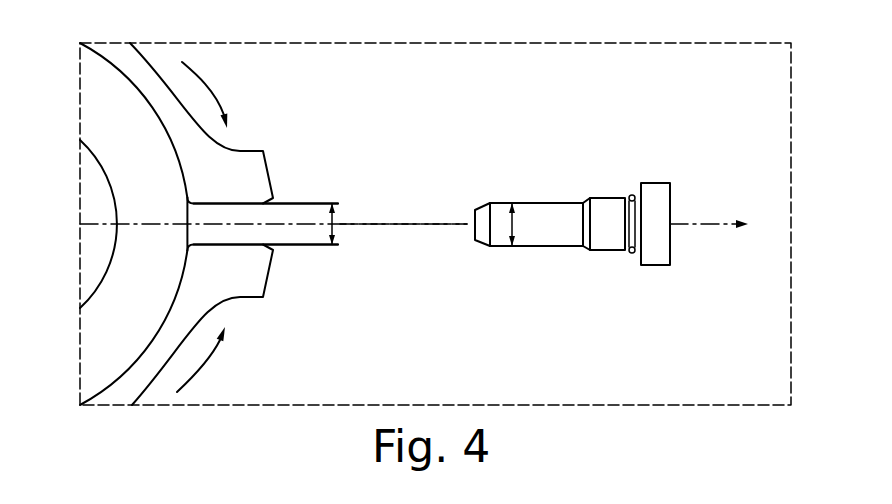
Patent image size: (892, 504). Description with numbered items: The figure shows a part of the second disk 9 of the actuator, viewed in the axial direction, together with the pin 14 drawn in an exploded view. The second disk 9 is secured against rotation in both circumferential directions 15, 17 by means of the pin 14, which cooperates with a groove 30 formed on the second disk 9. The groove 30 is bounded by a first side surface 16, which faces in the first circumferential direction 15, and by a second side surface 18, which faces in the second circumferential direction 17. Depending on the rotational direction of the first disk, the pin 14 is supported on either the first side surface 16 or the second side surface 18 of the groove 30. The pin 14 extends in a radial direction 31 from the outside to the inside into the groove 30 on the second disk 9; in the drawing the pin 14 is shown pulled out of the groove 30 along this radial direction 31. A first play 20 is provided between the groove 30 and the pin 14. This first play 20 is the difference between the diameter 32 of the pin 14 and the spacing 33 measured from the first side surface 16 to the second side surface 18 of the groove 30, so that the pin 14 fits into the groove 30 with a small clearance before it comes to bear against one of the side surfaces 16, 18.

The second disk 9 is at (365, 122).
The pin 14 is at (607, 210).
The first circumferential direction 15 is at (214, 95).
The first side surface 16 is at (212, 204).
The second circumferential direction 17 is at (211, 359).
The second side surface 18 is at (243, 245).
The first play 20 is at (436, 178).
The groove 30 is at (241, 211).
The radial direction 31 is at (725, 225).
The diameter 32 is at (513, 222).
The spacing 33 is at (349, 227).